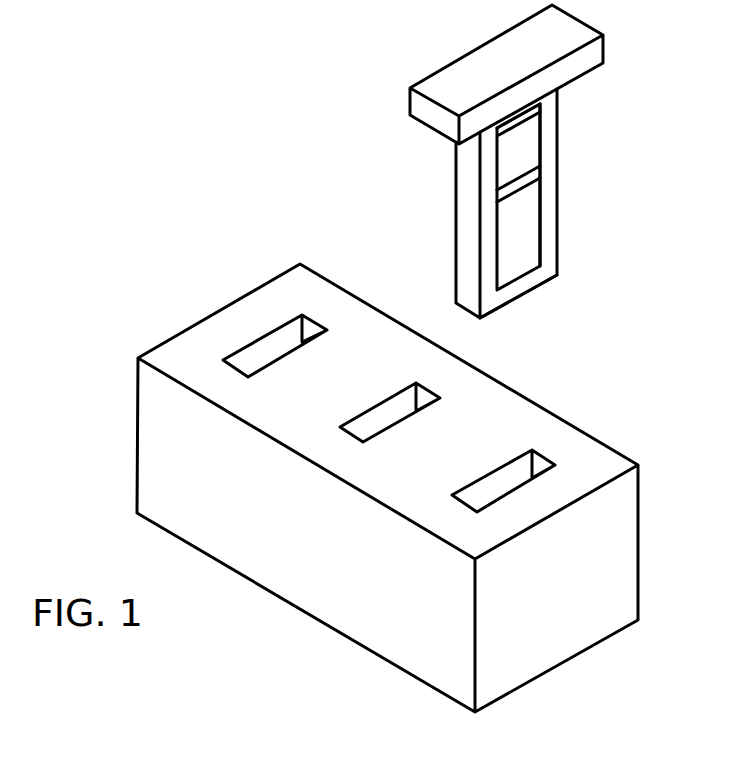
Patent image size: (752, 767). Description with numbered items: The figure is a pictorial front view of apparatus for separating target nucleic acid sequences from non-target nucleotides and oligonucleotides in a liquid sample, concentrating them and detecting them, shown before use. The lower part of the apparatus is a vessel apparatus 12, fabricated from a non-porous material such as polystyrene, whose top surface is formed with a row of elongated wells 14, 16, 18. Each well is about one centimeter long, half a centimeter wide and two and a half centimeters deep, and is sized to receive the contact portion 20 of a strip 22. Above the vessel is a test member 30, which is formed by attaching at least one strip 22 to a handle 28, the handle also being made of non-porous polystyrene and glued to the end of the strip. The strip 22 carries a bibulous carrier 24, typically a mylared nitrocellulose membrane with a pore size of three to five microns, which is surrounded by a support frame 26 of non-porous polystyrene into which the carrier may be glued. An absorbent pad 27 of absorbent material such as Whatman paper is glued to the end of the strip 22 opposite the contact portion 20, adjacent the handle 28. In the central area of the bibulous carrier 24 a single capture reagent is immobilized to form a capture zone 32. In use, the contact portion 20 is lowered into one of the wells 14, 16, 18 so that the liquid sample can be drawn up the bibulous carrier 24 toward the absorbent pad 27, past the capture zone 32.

The vessel apparatus 12 is at (298, 597).
The well 14 is at (538, 463).
The well 16 is at (403, 403).
The well 18 is at (282, 347).
The contact portion 20 is at (522, 288).
The strip 22 is at (455, 205).
The bibulous carrier 24 is at (540, 208).
The support frame 26 is at (548, 228).
The absorbent pad 27 is at (540, 118).
The handle 28 is at (582, 33).
The test member 30 is at (356, 66).
The capture zone 32 is at (525, 181).